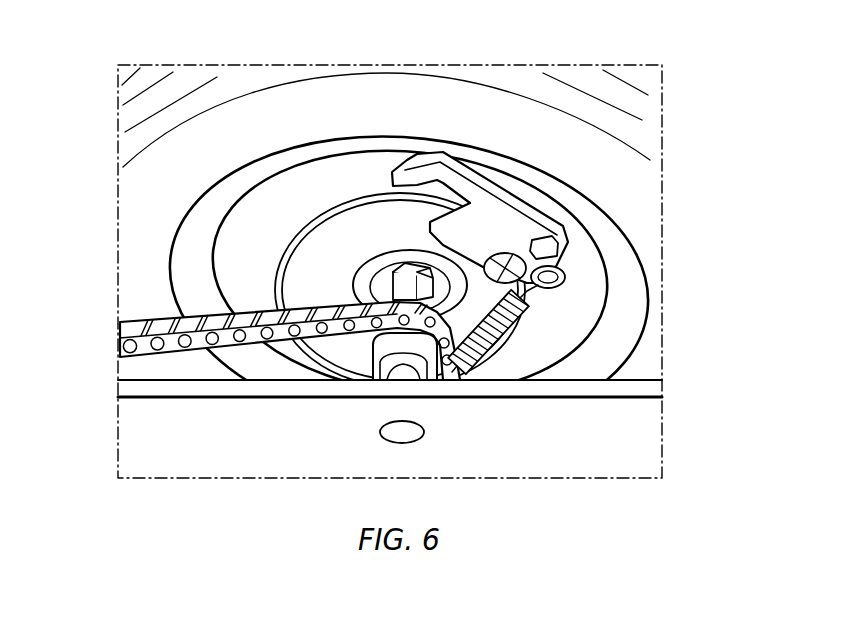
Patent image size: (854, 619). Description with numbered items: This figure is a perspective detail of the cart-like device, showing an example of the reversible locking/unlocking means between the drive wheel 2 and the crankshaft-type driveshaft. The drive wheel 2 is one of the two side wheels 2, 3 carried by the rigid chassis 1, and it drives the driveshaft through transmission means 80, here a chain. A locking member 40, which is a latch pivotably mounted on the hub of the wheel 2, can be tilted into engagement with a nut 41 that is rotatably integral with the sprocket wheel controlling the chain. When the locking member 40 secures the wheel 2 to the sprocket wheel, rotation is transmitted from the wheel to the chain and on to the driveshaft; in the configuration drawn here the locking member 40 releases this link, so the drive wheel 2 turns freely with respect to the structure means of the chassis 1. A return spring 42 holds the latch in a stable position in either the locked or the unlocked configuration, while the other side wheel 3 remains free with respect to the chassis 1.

The rigid chassis 1 is at (691, 457).
The drive wheel 2 is at (650, 160).
The side wheel 3 is at (637, 421).
The locking member 40 is at (487, 215).
The nut 41 is at (383, 277).
The return spring 42 is at (513, 335).
The transmission means 80 is at (143, 320).